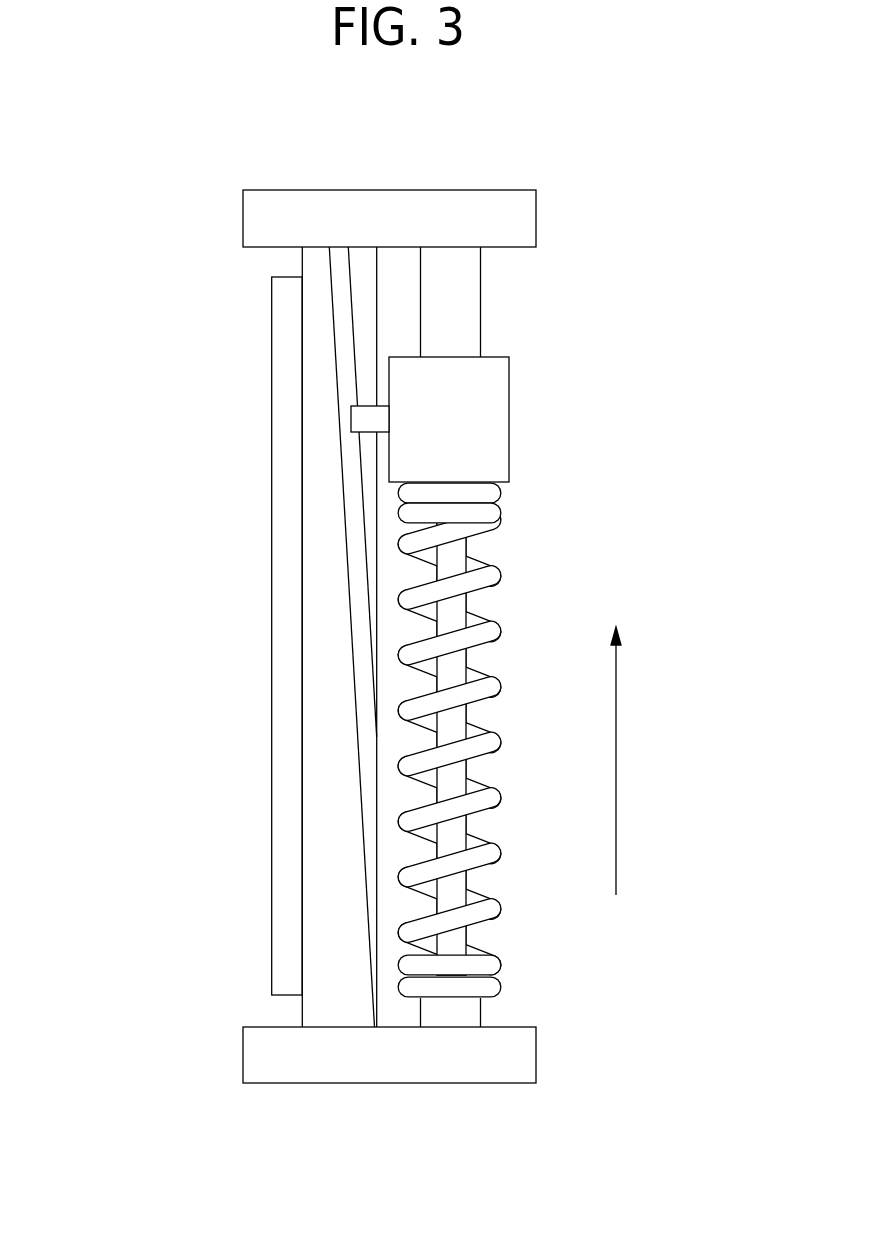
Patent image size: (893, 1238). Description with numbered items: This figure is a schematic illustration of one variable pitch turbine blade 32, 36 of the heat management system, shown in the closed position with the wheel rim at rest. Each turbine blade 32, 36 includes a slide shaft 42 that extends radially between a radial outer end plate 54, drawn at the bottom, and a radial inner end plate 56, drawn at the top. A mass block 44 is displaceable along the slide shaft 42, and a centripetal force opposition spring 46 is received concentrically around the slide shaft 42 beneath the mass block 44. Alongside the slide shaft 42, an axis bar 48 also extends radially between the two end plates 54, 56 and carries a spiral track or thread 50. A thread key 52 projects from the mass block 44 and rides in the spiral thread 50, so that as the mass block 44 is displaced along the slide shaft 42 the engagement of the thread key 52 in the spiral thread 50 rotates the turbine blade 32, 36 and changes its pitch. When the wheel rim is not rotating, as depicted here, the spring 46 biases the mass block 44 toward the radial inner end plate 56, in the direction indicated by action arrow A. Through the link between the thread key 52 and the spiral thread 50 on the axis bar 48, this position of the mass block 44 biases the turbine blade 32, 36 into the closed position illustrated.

The turbine blade of the first plurality of turbine blades 32 is at (174, 636).
The turbine blade of the second plurality of turbine blades 36 is at (274, 892).
The slide shaft 42 is at (455, 772).
The mass block 44 is at (488, 412).
The centripetal force opposition spring 46 is at (483, 577).
The axis bar 48 is at (308, 745).
The spiral track or thread 50 is at (350, 490).
The thread key 52 is at (365, 420).
The radial outer end plate 54 is at (374, 1075).
The radial inner end plate 56 is at (457, 207).
The action arrow A is at (618, 783).